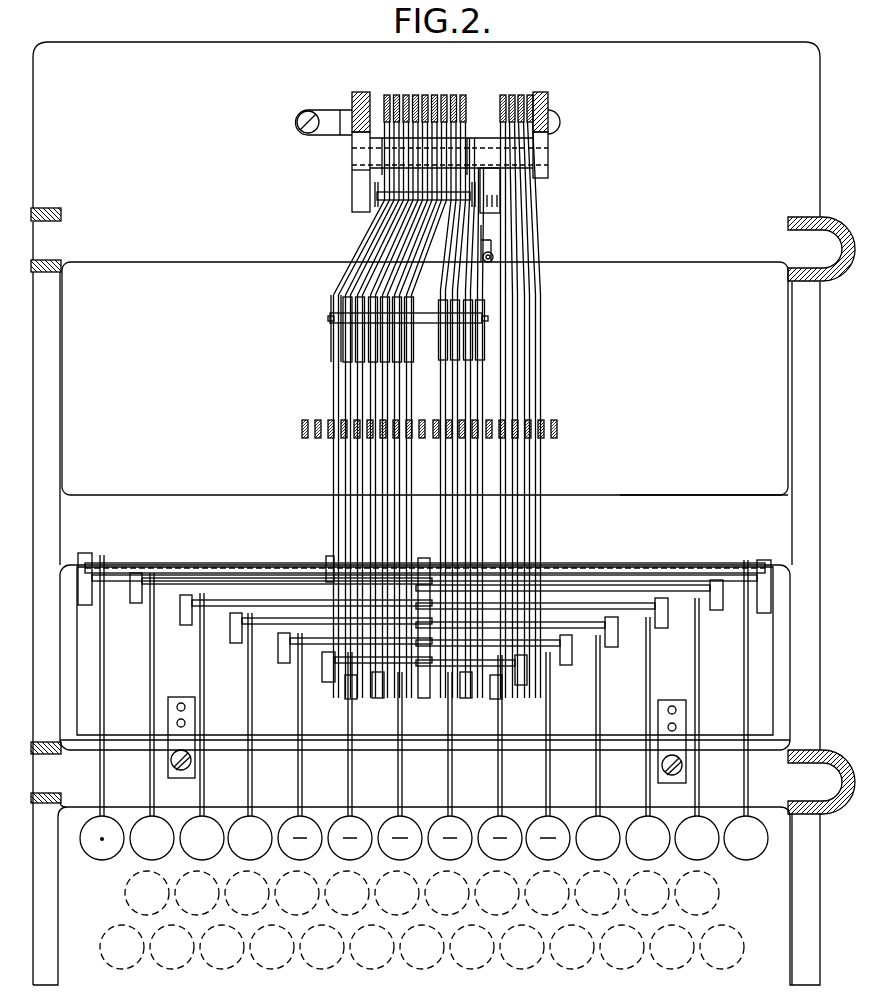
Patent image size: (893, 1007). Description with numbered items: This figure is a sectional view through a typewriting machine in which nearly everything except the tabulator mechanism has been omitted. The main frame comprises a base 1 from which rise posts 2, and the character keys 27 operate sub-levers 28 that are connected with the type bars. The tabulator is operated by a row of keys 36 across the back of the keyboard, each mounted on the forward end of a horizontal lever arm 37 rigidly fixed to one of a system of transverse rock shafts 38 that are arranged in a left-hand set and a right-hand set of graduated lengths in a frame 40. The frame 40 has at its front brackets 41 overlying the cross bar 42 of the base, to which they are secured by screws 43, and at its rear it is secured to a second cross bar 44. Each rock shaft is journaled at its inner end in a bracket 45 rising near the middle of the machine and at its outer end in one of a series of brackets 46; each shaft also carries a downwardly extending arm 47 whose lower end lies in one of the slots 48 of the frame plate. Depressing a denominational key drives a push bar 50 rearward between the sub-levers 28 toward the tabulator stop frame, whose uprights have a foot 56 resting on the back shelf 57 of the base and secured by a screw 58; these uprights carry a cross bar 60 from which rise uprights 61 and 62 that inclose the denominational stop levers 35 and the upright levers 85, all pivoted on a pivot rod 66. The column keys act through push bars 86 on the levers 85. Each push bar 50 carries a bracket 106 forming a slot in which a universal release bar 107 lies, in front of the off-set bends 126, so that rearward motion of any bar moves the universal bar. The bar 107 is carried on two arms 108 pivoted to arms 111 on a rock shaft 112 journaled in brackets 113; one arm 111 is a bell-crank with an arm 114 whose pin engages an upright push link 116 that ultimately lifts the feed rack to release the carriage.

The base 1 is at (52, 905).
The posts 2 is at (40, 262).
The character keys 27 is at (322, 950).
The sub-levers 28 is at (362, 440).
The levers 35 is at (402, 94).
The keys 36 is at (218, 855).
The lever arm 37 is at (150, 662).
The rock shafts 38 is at (203, 563).
The frame 40 is at (425, 639).
The brackets 41 is at (195, 720).
The cross bar 42 is at (425, 765).
The screws 43 is at (181, 770).
The second cross bar 44 is at (704, 479).
The bracket 45 is at (424, 558).
The brackets 46 is at (136, 603).
The arm 47 is at (330, 556).
The slots 48 is at (335, 590).
The push bar 50 is at (465, 400).
The foot 56 is at (325, 136).
The back shelf 57 is at (180, 262).
The screw 58 is at (297, 122).
The cross bar 60 is at (450, 145).
The upright 61 is at (360, 92).
The upright 62 is at (541, 92).
The pivot rod 66 is at (360, 150).
The upright levers 85 is at (519, 95).
The push bars 86 is at (528, 418).
The bracket 106 is at (340, 358).
The universal release bar 107 is at (428, 324).
The arms 108 is at (363, 235).
The arms 111 is at (375, 196).
The rock shaft 112 is at (454, 206).
The brackets 113 is at (352, 183).
The arm 114 is at (480, 244).
The push link 116 is at (494, 256).
The bends 126 is at (331, 292).